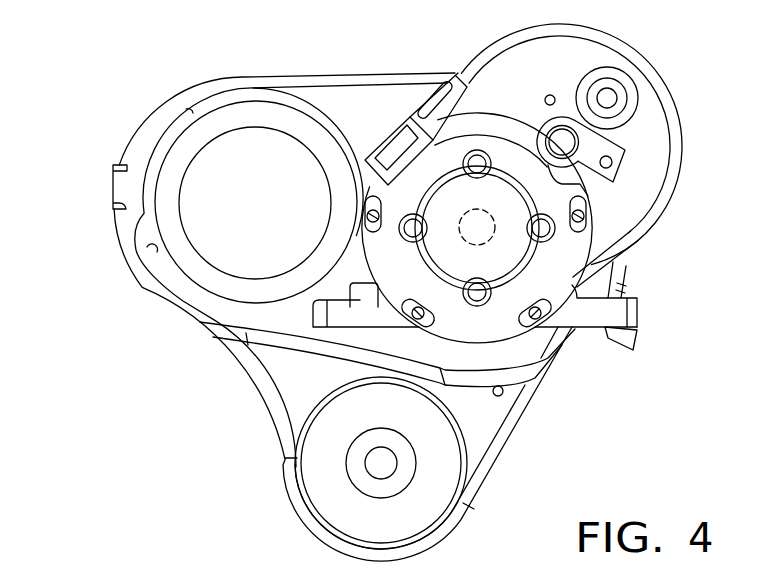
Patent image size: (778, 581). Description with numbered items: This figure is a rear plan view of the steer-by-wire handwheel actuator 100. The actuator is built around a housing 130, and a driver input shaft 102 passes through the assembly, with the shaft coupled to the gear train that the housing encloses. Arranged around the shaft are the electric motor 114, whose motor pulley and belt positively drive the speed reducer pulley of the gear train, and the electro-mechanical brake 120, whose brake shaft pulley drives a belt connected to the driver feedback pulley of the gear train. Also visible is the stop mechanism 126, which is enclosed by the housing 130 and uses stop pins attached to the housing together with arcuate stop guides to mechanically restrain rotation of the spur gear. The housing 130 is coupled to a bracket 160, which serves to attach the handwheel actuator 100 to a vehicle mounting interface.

The handwheel actuator 100 is at (236, 400).
The driver input shaft 102 is at (463, 210).
The electric motor 114 is at (207, 104).
The electro-mechanical brake 120 is at (648, 95).
The stop mechanism 126 is at (331, 503).
The housing 130 is at (321, 74).
The bracket 160 is at (640, 311).